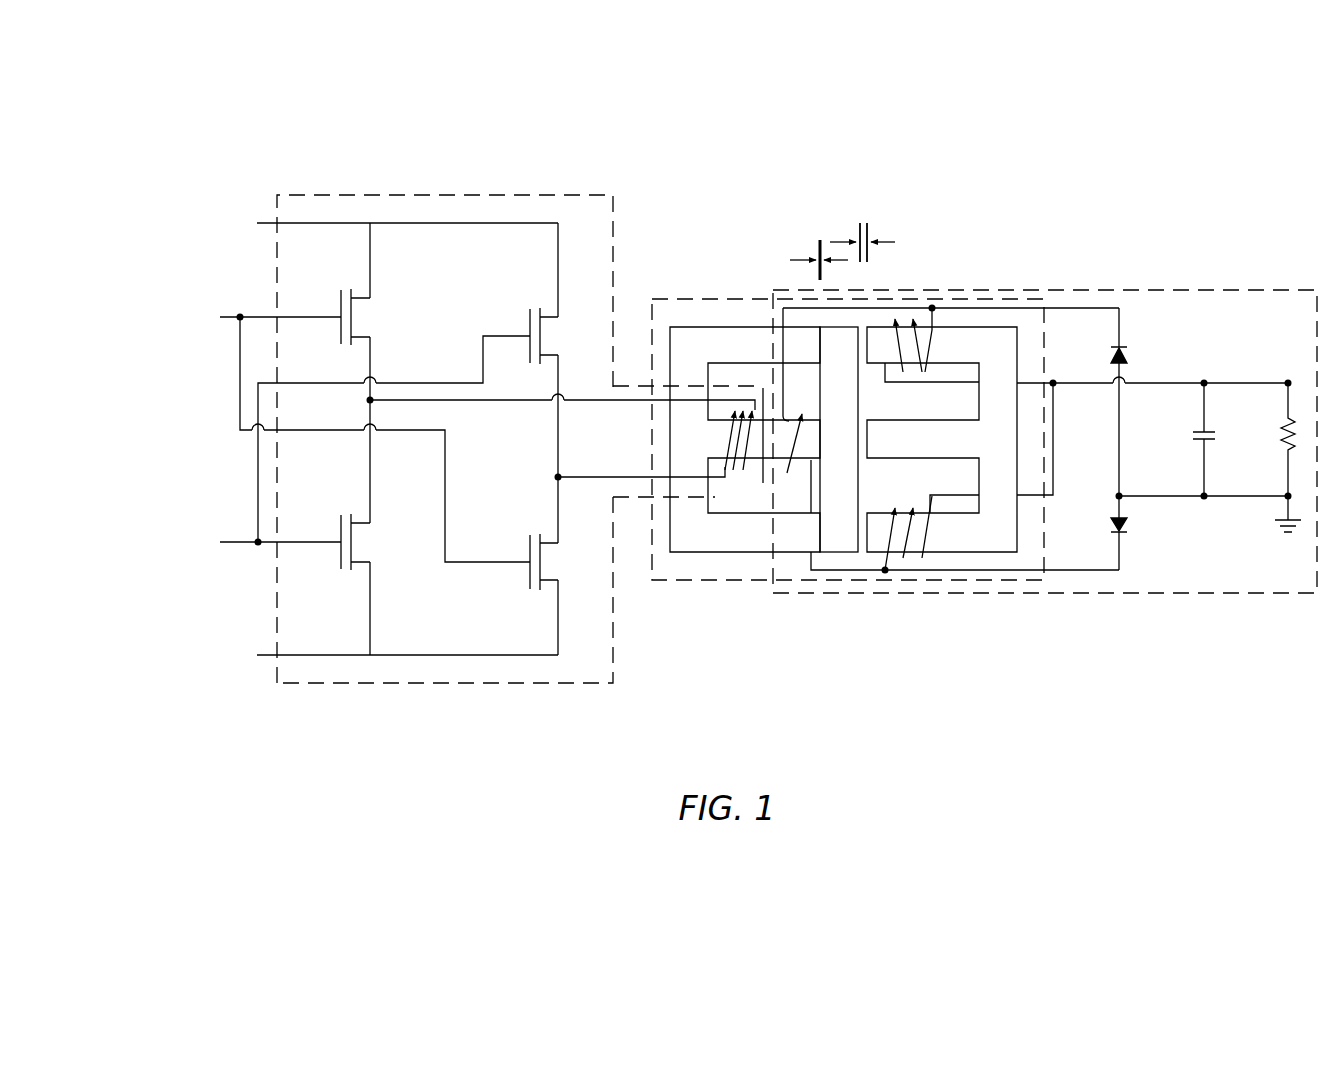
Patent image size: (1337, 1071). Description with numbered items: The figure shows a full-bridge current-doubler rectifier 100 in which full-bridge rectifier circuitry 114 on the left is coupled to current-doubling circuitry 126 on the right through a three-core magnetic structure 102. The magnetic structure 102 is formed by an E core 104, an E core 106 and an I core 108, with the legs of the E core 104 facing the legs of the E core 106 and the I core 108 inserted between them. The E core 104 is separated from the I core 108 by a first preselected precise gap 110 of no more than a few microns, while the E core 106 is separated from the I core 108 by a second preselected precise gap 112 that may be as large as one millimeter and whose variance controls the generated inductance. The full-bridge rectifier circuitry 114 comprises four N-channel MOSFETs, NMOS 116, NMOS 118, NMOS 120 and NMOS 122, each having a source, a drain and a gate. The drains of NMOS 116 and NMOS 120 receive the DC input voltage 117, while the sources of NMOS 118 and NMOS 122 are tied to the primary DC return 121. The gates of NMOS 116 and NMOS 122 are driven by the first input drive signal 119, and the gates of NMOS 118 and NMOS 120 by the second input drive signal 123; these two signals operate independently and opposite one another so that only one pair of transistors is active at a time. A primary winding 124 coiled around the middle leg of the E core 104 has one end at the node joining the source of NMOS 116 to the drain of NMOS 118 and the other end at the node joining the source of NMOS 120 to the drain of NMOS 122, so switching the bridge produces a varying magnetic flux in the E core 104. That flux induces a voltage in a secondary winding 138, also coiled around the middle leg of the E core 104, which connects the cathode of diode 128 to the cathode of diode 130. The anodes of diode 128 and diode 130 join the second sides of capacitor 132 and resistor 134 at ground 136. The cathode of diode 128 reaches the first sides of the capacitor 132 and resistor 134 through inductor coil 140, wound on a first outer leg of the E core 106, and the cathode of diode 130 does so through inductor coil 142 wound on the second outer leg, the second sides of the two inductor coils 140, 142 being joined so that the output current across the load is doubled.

The full-bridge current-doubler rectifier 100 is at (1101, 94).
The three-core magnetic structure 102 is at (730, 298).
The E core 104 is at (698, 325).
The E core 106 is at (1017, 537).
The I core 108 is at (863, 385).
The first preselected precise gap 110 is at (820, 238).
The second preselected precise gap 112 is at (862, 222).
The full-bridge rectifier circuitry 114 is at (303, 195).
The NMOS 116 is at (334, 290).
The DC input voltage 117 is at (158, 208).
The NMOS 118 is at (334, 515).
The first input drive signal 119 is at (95, 288).
The NMOS 120 is at (522, 308).
The primary DC return 121 is at (180, 685).
The NMOS 122 is at (522, 533).
The second input drive signal 123 is at (90, 497).
The primary winding 124 is at (740, 460).
The current-doubling circuitry 126 is at (1258, 288).
The diode 128 is at (1128, 345).
The diode 130 is at (1135, 545).
The capacitor 132 is at (1187, 437).
The resistor 134 is at (1271, 437).
The ground 136 is at (1273, 535).
The secondary winding 138 is at (787, 473).
The inductor coil 140 is at (907, 313).
The inductor coil 142 is at (905, 570).